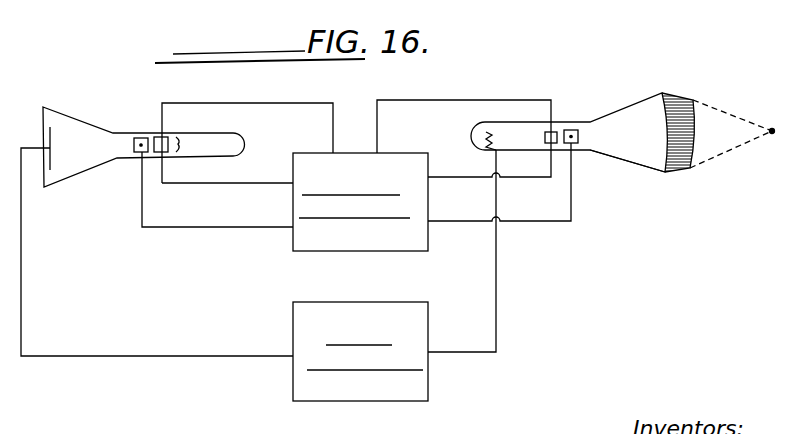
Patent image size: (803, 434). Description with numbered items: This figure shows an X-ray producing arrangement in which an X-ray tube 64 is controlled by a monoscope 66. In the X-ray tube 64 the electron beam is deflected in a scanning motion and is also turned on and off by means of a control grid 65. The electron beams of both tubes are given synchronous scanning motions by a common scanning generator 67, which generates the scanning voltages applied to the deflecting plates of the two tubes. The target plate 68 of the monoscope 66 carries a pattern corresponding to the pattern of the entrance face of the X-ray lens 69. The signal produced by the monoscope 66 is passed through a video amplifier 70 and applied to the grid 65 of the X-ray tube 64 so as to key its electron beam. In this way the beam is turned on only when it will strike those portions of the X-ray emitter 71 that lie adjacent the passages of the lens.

The X-ray tube 64 is at (627, 108).
The control grid 65 is at (498, 140).
The monoscope 66 is at (72, 115).
The scanning generator 67 is at (382, 246).
The target plate 68 is at (50, 160).
The X-ray lens 69 is at (685, 165).
The video amplifier 70 is at (355, 393).
The X-ray emitter 71 is at (668, 150).